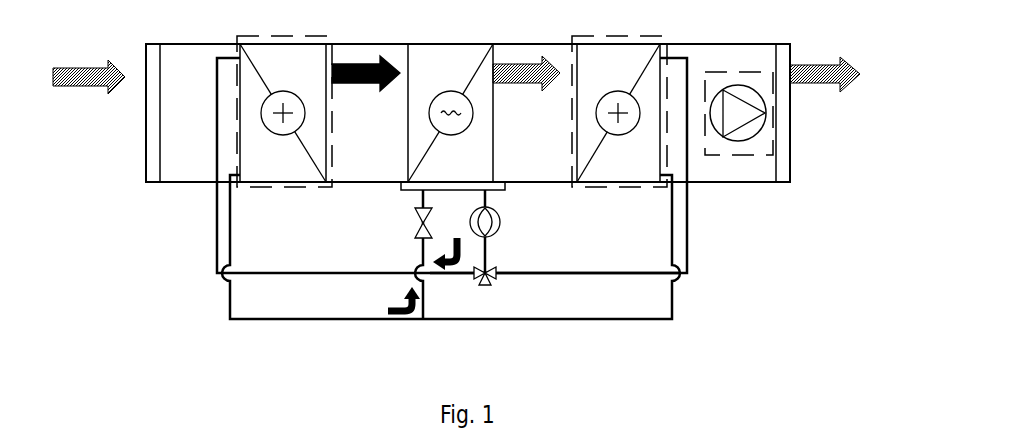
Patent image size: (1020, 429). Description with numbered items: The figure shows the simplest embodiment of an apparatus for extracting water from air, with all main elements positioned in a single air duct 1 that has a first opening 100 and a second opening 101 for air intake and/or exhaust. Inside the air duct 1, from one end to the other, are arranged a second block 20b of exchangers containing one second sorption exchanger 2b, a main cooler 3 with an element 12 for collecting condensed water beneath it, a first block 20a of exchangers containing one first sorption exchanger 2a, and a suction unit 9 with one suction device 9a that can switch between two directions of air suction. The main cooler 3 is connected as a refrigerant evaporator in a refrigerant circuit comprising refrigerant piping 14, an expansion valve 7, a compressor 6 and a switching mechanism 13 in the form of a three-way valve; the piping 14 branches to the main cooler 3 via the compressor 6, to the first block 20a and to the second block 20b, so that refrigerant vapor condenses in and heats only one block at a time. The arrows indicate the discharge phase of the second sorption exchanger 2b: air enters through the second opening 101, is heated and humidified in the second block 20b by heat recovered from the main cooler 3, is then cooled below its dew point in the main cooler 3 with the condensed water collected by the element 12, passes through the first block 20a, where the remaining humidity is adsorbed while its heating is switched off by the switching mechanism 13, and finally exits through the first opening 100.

The air duct 1 is at (181, 195).
The second opening 101 is at (137, 103).
The first opening 100 is at (807, 117).
The second sorption exchanger 2b is at (280, 204).
The main cooler 3 is at (405, 200).
The element for collecting condensed water 12 is at (390, 204).
The first sorption exchanger 2a is at (653, 201).
The suction unit 9 is at (728, 223).
The suction device 9a is at (700, 363).
The second block of exchangers 20b is at (247, 205).
The first block of exchangers 20a is at (578, 201).
The refrigerant piping 14 is at (615, 289).
The expansion valve 7 is at (410, 253).
The compressor 6 is at (472, 255).
The switching mechanism 13 is at (482, 296).